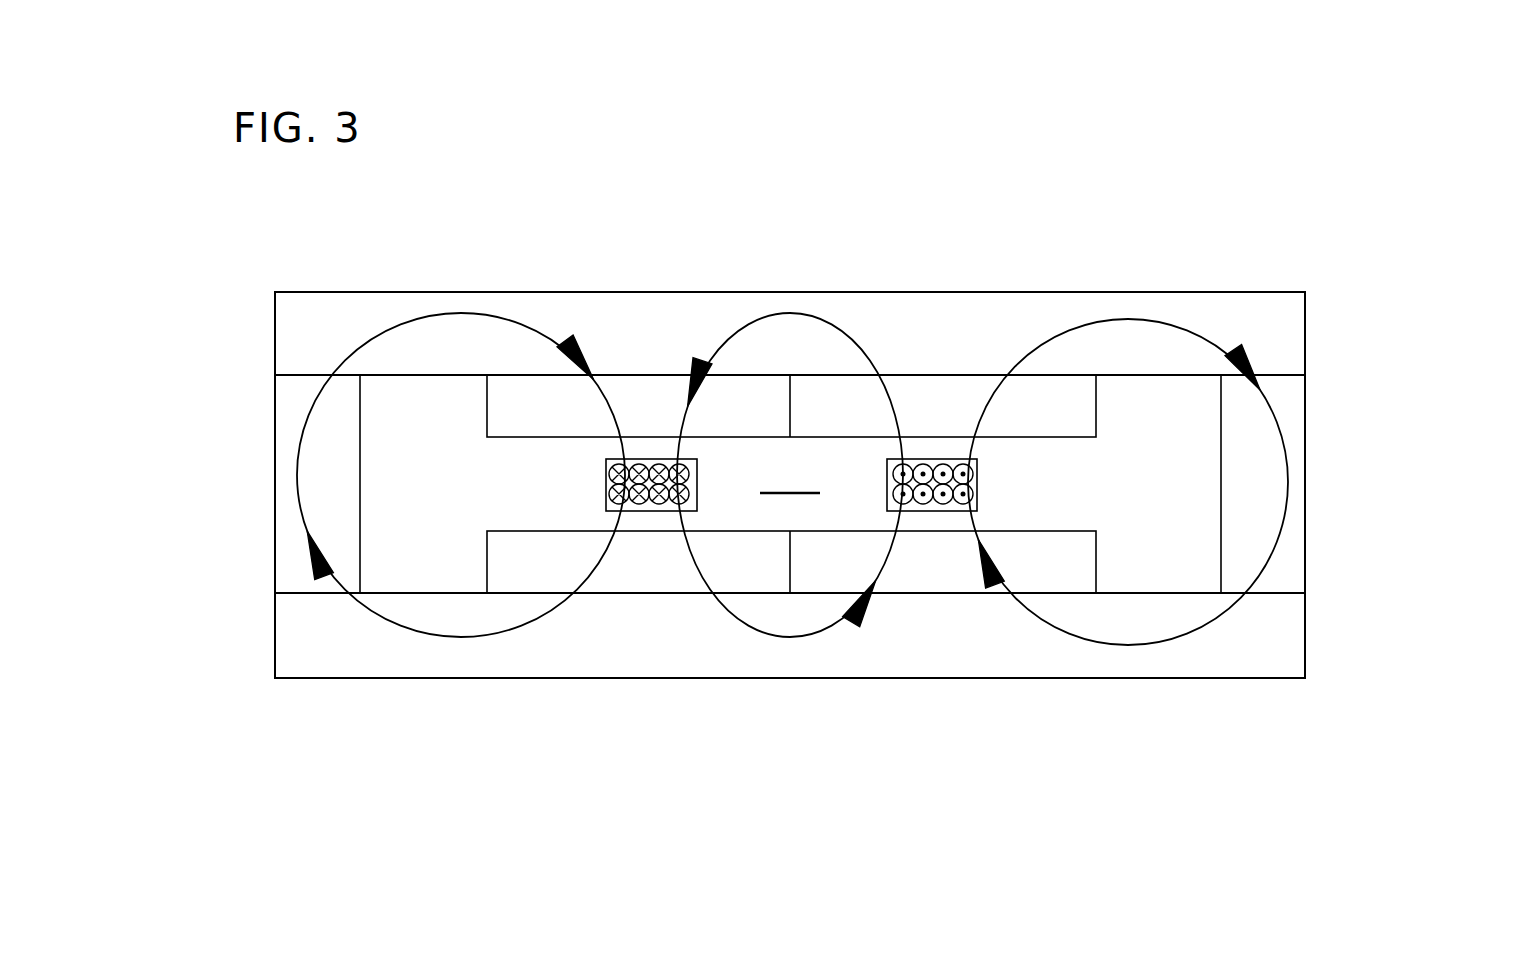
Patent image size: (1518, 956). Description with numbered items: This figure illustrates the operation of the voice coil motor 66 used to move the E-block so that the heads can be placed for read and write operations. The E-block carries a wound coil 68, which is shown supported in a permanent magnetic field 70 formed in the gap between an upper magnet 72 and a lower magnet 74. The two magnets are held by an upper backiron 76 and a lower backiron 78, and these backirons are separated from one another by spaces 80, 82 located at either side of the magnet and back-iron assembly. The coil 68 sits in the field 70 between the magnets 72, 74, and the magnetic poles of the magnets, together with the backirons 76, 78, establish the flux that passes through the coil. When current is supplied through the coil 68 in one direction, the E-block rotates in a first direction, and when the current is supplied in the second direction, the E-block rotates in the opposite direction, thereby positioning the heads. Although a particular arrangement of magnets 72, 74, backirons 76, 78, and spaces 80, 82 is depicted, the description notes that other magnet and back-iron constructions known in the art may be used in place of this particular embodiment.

The magnetic actuator assembly 66 is at (1048, 187).
The wound coil 68 is at (925, 470).
The permanent magnetic field 70 is at (790, 476).
The upper magnet 72 is at (648, 405).
The lower magnet 74 is at (679, 572).
The upper backiron 76 is at (512, 290).
The lower backiron 78 is at (1123, 680).
The space 80 is at (287, 452).
The space 82 is at (1297, 488).